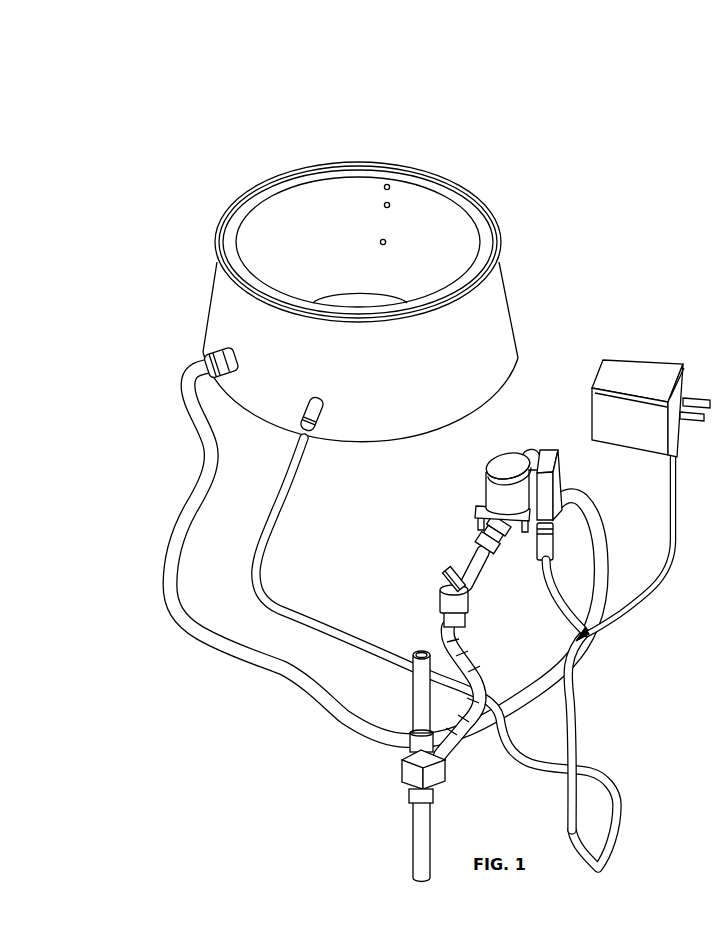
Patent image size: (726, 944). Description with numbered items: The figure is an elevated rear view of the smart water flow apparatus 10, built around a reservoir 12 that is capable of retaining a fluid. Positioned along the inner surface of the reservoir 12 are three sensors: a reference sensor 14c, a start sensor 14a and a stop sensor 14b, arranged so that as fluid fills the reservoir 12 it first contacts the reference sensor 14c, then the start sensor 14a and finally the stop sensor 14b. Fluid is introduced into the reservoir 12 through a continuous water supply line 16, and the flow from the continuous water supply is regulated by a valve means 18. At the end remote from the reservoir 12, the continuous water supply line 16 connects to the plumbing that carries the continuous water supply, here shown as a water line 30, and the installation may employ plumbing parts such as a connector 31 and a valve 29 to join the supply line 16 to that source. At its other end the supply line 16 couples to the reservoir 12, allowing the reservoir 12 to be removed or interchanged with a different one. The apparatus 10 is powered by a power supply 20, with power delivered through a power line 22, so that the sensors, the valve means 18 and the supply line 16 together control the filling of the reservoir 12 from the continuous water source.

The smart water flow apparatus 10 is at (112, 47).
The reservoir 12 is at (482, 330).
The start sensor 14a is at (398, 196).
The stop sensor 14b is at (396, 176).
The reference sensor 14c is at (395, 233).
The continuous water supply line 16 is at (163, 601).
The valve means 18 is at (508, 467).
The power supply 20 is at (648, 380).
The power line 22 is at (298, 602).
The valve 29 is at (453, 603).
The water line 30 is at (418, 833).
The connector 31 is at (410, 772).